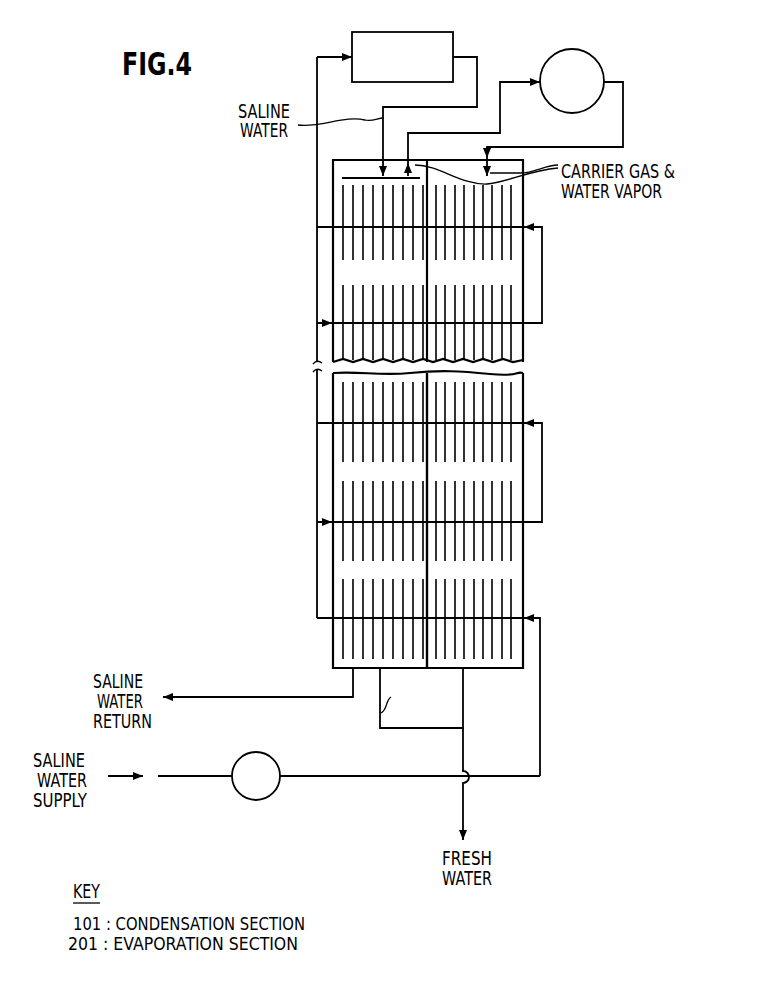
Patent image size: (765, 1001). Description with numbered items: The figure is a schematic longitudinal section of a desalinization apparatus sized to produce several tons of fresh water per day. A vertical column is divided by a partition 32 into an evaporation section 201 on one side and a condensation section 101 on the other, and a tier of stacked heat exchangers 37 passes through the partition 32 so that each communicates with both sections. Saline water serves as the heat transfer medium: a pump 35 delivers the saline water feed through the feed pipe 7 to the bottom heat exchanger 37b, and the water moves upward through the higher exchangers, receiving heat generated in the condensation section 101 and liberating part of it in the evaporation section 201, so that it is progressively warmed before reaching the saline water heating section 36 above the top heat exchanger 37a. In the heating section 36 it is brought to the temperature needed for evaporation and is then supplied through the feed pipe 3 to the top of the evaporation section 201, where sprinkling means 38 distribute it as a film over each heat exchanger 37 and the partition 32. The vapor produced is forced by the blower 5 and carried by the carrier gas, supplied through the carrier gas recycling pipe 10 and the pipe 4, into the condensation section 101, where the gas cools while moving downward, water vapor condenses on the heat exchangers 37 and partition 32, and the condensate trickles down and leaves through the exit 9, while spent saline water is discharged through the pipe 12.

The saline water heating section 36 is at (417, 32).
The feed pipe 3 is at (478, 57).
The pipe 4 is at (513, 82).
The blower 5 is at (590, 52).
The sprinkling means 38 is at (355, 178).
The top heat exchanger 37a is at (362, 208).
The evaporation section 201 is at (365, 272).
The condensation section 101 is at (500, 273).
The partition 32 is at (427, 470).
The heat exchanger 37 is at (498, 553).
The bottom heat exchanger 37b is at (362, 594).
The pipe 12 is at (259, 696).
The carrier gas recycling pipe 10 is at (427, 732).
The pump 35 is at (243, 757).
The feed pipe 7 is at (336, 778).
The exit 9 is at (463, 818).